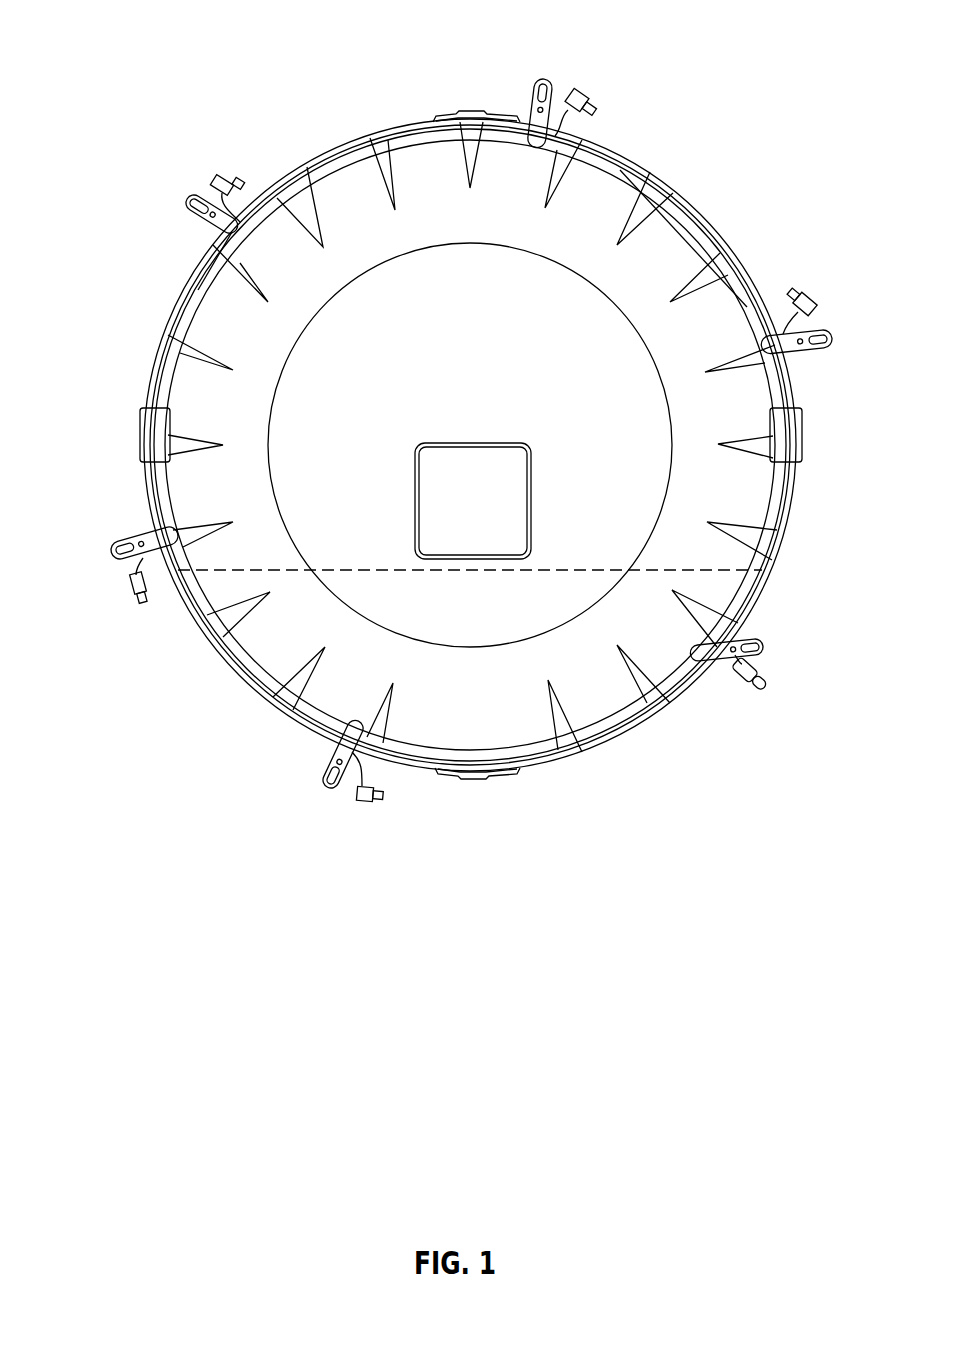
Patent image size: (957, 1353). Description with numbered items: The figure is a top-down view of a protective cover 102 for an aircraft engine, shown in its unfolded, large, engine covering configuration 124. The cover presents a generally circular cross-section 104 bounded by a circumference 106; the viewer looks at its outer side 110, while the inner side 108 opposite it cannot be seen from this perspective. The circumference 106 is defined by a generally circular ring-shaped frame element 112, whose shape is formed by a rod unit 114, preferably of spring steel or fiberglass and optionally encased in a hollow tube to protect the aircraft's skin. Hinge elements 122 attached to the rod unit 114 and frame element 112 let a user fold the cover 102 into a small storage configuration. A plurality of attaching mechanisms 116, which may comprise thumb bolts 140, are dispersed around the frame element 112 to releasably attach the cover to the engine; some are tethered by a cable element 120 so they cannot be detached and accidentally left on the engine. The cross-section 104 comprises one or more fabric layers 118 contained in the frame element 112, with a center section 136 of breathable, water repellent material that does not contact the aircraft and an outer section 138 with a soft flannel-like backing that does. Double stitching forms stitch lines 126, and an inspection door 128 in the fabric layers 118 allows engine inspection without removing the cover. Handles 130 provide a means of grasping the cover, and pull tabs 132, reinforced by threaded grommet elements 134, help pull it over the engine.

The protective cover 102 is at (258, 113).
The generally circular cross-section 104 is at (223, 322).
The circumference 106 is at (675, 190).
The inner side 108 is at (700, 262).
The outer side 110 is at (753, 283).
The frame element 112 is at (627, 170).
The rod unit 114 is at (688, 217).
The attaching mechanisms 116 is at (812, 300).
The fabric layers 118 is at (213, 345).
The cable element 120 is at (822, 340).
The hinge element 122 is at (145, 438).
The engine covering configuration 124 is at (370, 102).
The stitch lines 126 is at (330, 578).
The inspection door 128 is at (422, 490).
The handles 130 is at (488, 112).
The pull tabs 132 is at (330, 785).
The threaded grommet elements 134 is at (330, 762).
The center section 136 is at (460, 322).
The outer section 138 is at (363, 178).
The thumb bolts 140 is at (130, 570).